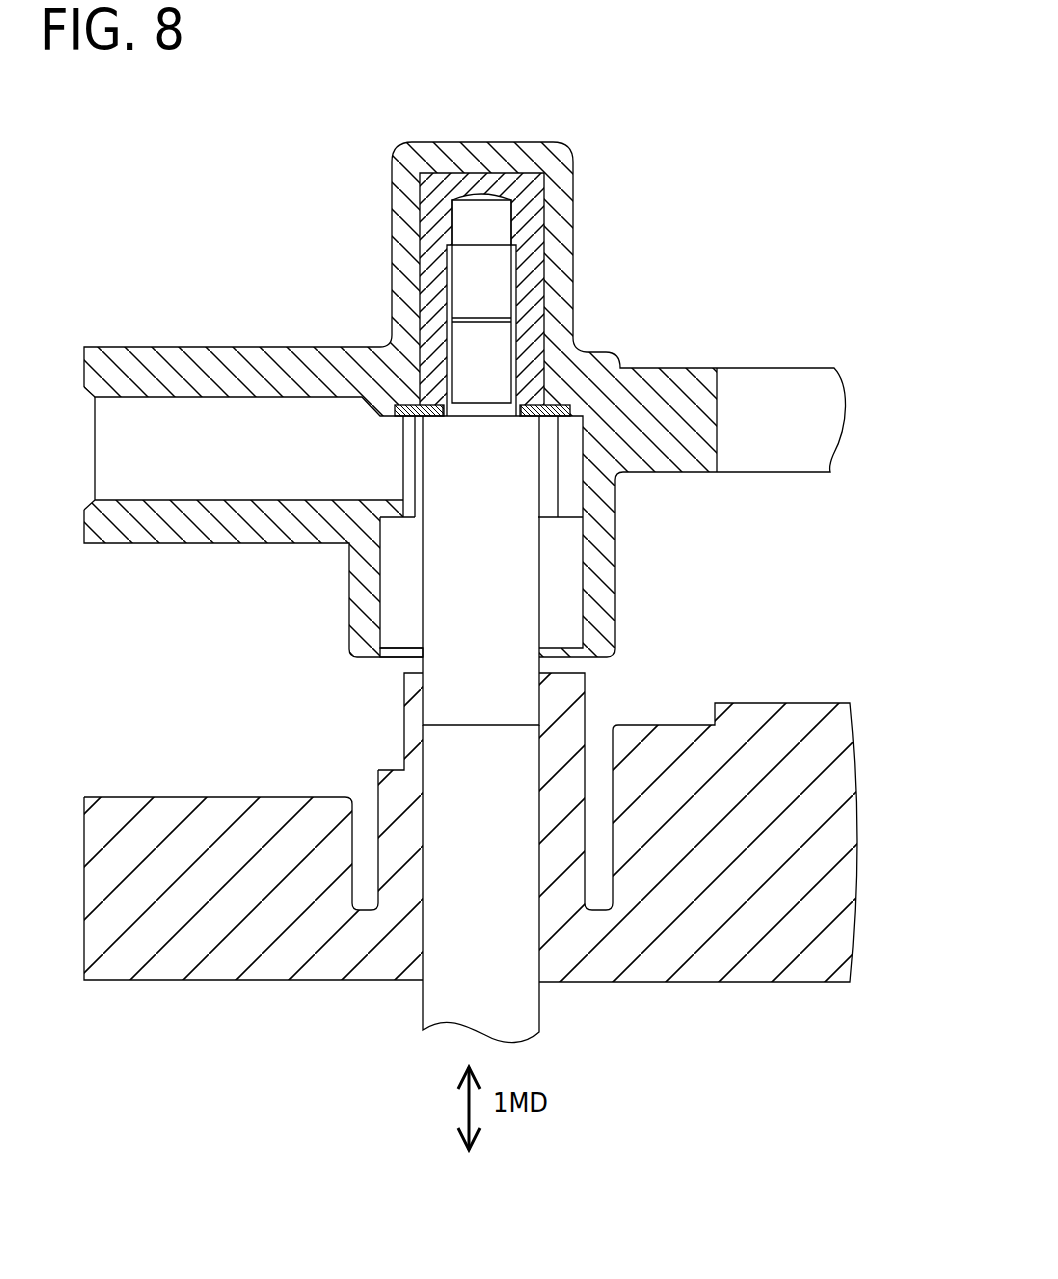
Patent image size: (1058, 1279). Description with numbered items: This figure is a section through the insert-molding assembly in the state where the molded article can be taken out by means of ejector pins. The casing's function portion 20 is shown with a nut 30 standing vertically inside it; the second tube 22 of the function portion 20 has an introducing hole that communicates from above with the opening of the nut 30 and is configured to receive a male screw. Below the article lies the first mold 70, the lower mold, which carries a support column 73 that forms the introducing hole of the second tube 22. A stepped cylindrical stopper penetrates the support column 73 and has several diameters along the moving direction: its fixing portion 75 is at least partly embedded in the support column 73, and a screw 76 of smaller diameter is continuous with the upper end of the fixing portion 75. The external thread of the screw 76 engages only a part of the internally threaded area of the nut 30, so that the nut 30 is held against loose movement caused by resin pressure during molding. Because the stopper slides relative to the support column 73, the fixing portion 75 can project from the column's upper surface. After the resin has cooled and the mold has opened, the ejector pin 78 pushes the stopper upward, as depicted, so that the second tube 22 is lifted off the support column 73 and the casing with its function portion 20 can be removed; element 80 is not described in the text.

The function portion 20 is at (214, 362).
The second tube 22 is at (368, 585).
The nut 30 is at (532, 215).
The first mold 70 is at (845, 783).
The support column 73 is at (568, 693).
The fixing portion 75 is at (503, 617).
The screw 76 is at (502, 350).
The ejector pin 78 is at (517, 1020).
The washer 80 is at (573, 409).